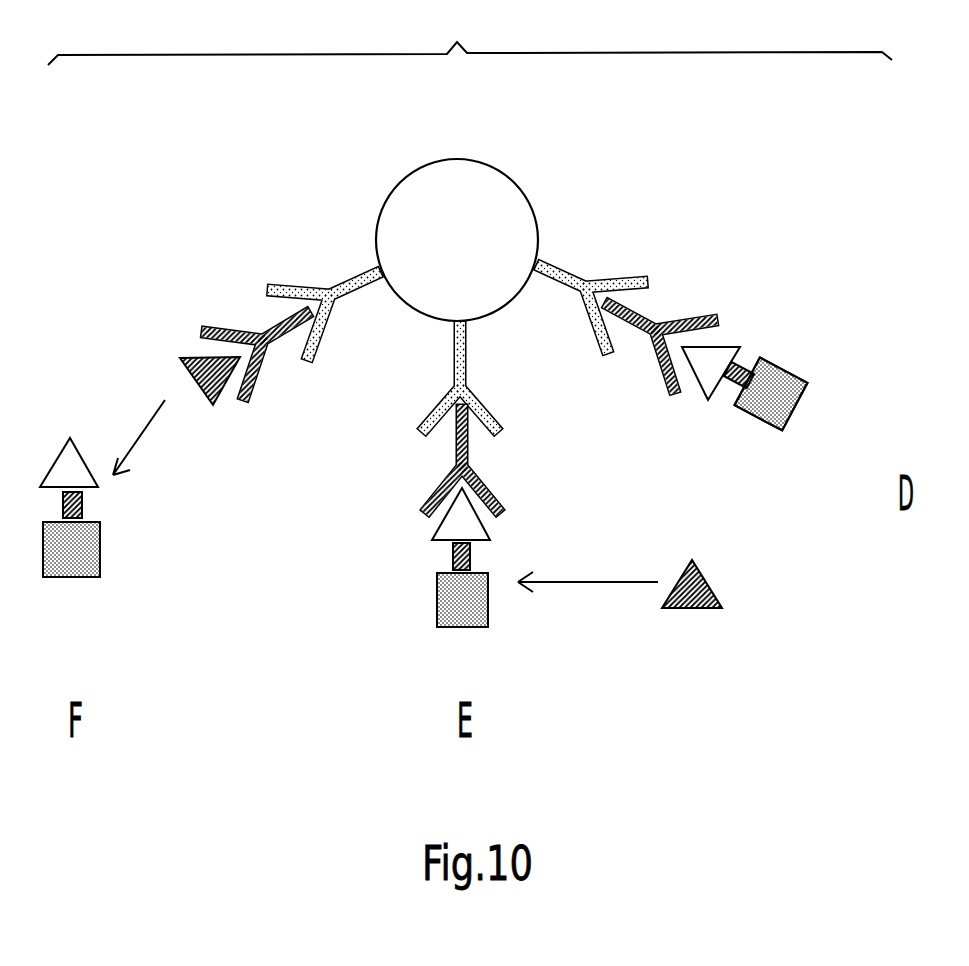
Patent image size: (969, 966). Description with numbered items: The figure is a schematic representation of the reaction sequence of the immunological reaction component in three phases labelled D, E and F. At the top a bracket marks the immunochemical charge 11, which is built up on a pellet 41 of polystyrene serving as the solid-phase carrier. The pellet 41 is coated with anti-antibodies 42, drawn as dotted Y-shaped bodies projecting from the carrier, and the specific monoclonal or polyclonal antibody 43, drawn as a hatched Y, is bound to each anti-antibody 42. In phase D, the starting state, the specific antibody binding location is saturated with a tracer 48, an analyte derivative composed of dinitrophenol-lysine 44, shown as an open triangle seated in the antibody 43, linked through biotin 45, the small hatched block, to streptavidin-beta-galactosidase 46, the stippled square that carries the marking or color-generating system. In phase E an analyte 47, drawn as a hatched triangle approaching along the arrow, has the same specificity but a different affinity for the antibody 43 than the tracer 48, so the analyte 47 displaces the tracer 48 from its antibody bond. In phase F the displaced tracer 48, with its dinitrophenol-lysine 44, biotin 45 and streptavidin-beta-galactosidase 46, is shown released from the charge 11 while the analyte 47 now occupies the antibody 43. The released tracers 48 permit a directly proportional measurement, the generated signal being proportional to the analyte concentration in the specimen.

The charge 11 is at (470, 34).
The pellet 41 is at (500, 165).
The anti-antibodies 42 is at (282, 287).
The antibody 43 is at (200, 325).
The dinitrophenol-lysine 44 is at (62, 448).
The biotin 45 is at (84, 498).
The streptavidin-beta-galactosidase 46 is at (80, 580).
The analyte 47 is at (213, 407).
The tracer molecules 48 is at (100, 555).